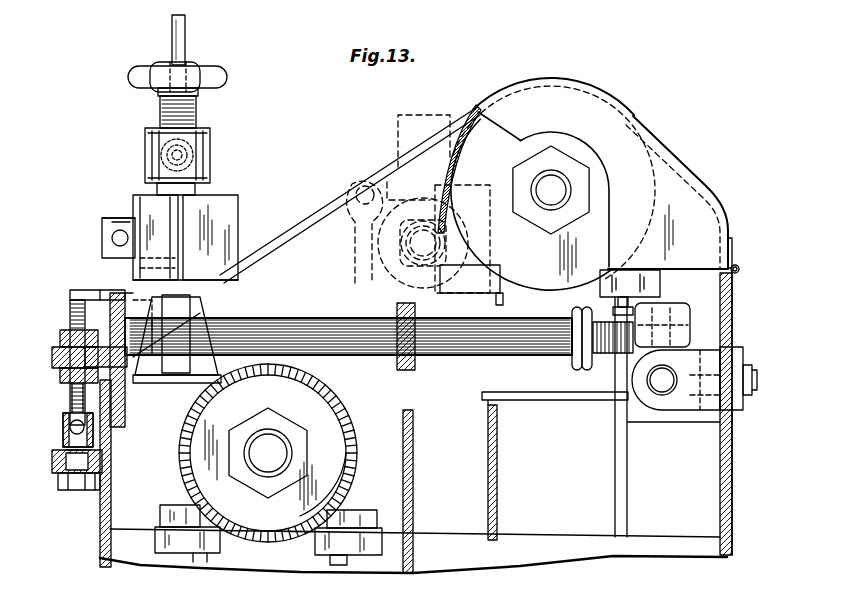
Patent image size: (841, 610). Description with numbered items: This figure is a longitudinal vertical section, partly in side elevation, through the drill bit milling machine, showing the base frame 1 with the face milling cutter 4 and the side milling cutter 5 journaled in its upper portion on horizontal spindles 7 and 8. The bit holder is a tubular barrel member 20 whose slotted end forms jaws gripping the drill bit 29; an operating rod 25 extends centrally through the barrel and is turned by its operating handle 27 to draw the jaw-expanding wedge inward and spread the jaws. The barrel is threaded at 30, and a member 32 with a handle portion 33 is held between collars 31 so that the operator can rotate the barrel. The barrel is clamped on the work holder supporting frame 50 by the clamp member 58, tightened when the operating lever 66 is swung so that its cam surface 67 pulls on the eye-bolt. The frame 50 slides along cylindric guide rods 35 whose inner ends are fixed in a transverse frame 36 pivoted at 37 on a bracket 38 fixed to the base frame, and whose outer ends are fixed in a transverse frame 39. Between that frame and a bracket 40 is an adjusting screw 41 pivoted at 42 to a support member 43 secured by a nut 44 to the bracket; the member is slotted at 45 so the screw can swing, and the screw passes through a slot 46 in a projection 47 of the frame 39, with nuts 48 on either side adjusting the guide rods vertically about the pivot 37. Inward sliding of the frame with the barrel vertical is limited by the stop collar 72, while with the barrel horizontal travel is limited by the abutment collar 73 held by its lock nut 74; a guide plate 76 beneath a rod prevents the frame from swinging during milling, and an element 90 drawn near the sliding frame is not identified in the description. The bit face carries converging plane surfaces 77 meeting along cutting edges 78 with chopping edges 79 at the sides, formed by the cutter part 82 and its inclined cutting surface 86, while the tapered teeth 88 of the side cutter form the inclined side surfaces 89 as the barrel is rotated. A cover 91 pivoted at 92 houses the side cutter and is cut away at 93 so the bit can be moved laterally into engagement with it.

The base frame 1 is at (100, 552).
The face milling cutter 4 is at (245, 528).
The side milling cutter 5 is at (598, 155).
The spindle 7 is at (268, 430).
The spindle 8 is at (546, 186).
The tubular barrel member 20 is at (198, 118).
The operating rod 25 is at (256, 258).
The operating handle 27 is at (195, 70).
The drill bit 29 is at (200, 313).
The threaded portion of barrel 30 is at (160, 106).
The collars 31 is at (206, 172).
The member 32 is at (148, 150).
The handle portion 33 is at (187, 38).
The cylindric guide rods 35 is at (383, 272).
The transverse frame 36 is at (680, 305).
The pivot 37 is at (664, 396).
The bracket 38 is at (700, 380).
The transverse frame 39 is at (100, 293).
The bracket 40 is at (55, 470).
The screw 41 is at (72, 400).
The pivot 42 is at (66, 449).
The support member 43 is at (65, 490).
The nut 44 is at (98, 478).
The slot 45 is at (63, 430).
The slot 46 is at (52, 357).
The projection 47 is at (70, 318).
The nuts 48 is at (60, 336).
The work holder supporting frame 50 is at (236, 200).
The clamp member 58 is at (135, 200).
The operating lever 66 is at (102, 237).
The cam surface 67 is at (104, 222).
The stop collar 72 is at (400, 368).
The abutment collar 73 is at (575, 372).
The lock nut 74 is at (588, 372).
The guide plate 76 is at (484, 398).
The converging plane surfaces 77 is at (150, 384).
The cutting edges 78 is at (212, 384).
The chopping edges 79 is at (190, 380).
The cutter part 82 is at (340, 440).
The cutting surface 86 is at (300, 556).
The tapered teeth 88 is at (350, 462).
The inclined side surfaces 89 is at (114, 293).
The slide bar 90 is at (165, 380).
The cover 91 is at (558, 78).
The pivot 92 is at (740, 267).
The cut-away portion 93 is at (440, 205).